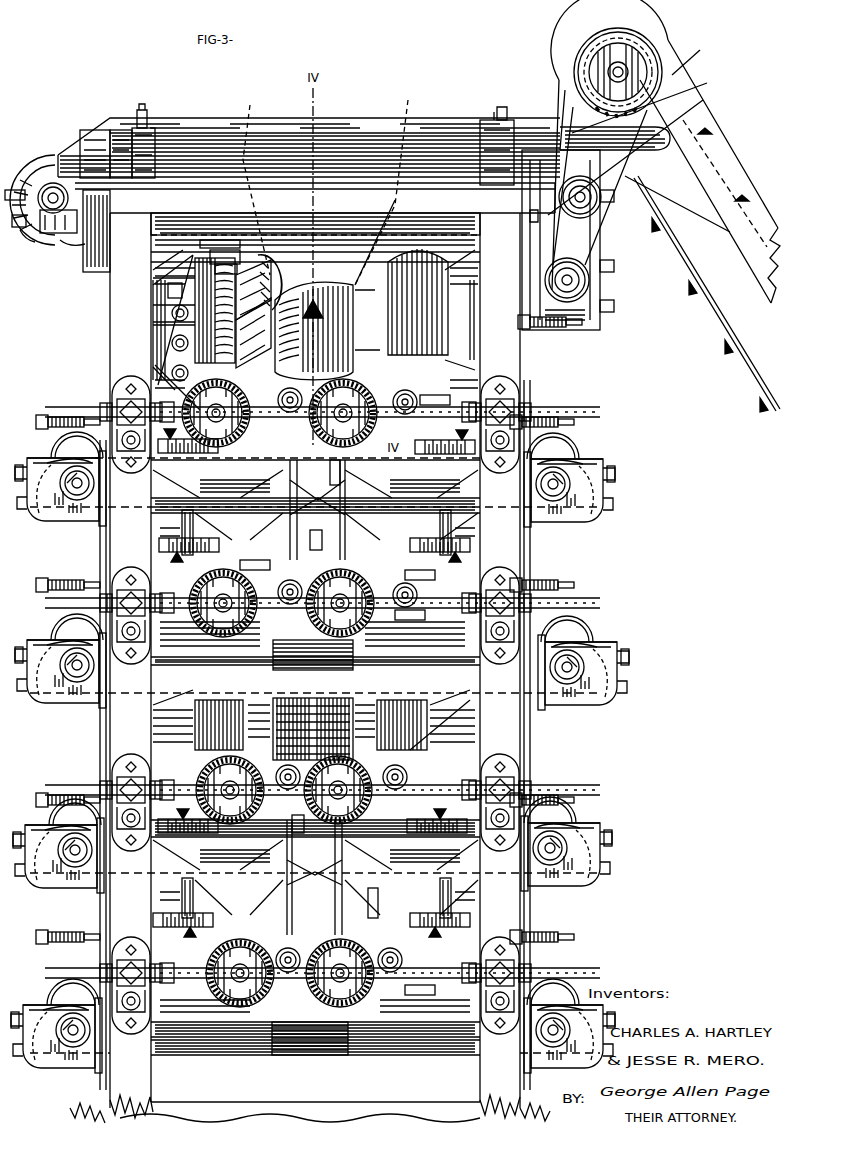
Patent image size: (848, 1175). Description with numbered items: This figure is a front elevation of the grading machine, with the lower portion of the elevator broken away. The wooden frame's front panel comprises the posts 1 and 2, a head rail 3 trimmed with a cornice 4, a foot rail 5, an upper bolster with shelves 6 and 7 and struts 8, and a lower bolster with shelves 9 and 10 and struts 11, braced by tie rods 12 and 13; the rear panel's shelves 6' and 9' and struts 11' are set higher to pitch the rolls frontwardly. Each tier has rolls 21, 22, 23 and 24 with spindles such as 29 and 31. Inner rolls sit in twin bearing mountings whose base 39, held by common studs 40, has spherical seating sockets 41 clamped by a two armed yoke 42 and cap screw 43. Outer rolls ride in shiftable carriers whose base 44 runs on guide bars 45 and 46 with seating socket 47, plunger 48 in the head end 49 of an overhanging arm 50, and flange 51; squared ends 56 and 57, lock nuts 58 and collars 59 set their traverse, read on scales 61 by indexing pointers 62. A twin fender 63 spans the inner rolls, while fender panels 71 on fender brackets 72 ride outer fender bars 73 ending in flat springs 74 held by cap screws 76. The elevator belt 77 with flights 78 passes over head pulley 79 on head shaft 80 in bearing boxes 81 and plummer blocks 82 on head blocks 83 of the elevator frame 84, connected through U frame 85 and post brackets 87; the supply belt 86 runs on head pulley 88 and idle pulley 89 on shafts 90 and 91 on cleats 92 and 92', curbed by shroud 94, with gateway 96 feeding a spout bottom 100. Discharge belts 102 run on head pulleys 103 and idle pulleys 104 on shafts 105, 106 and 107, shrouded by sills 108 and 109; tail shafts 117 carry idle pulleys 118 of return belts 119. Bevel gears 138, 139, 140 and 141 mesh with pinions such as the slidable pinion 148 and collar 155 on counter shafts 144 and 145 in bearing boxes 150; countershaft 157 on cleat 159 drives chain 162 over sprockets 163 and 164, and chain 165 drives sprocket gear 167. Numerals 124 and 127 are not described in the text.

The post 1 is at (520, 1105).
The post 2 is at (103, 1118).
The head rail 3 is at (190, 224).
The cornice 4 is at (170, 209).
The foot rail 5 is at (300, 1111).
The upper bolster shelf 6 is at (139, 330).
The upper bolster shelf of rear panel 6' is at (303, 468).
The upper bolster shelf 7 is at (385, 520).
The strut 8 is at (265, 545).
The lower bolster shelf 9 is at (316, 697).
The lower bolster shelf of rear panel 9' is at (451, 721).
The lower bolster shelf 10 is at (377, 895).
The strut 11 is at (257, 918).
The strut of rear panel 11' is at (465, 750).
The tie rod 12 is at (472, 491).
The tie rod 13 is at (472, 861).
The left hand outer roll 21 is at (258, 563).
The right hand inner roll 22 is at (259, 592).
The left hand inner roll 23 is at (336, 590).
The right hand outer roll 24 is at (362, 579).
The front end spindle 29 is at (289, 680).
The front end spindle 31 is at (397, 681).
The base of twin bearing mounting 39 is at (312, 732).
The common stud 40 is at (313, 696).
The spherical seating socket 41 is at (307, 925).
The two armed yoke 42 is at (289, 633).
The cap screw 43 is at (304, 645).
The base of shiftable bearing carrier 44 is at (329, 728).
The forward guide bar 45 is at (580, 395).
The hinder guide bar 46 is at (53, 679).
The spherical seating socket 47 is at (379, 925).
The plunger 48 is at (230, 268).
The head end of overhanging arm 49 is at (233, 249).
The overhanging arm 50 is at (302, 677).
The flange 51 is at (220, 242).
The squared end 56 is at (582, 324).
The squared end 57 is at (40, 419).
The lock nut 58 is at (324, 661).
The collar 59 is at (383, 686).
The scale 61 is at (220, 444).
The indexing pointer 62 is at (314, 739).
The twin fender 63 is at (321, 584).
The fender panel 71 is at (315, 576).
The fender bracket 72 is at (157, 302).
The outer fender bar 73 is at (465, 323).
The flat spring 74 is at (464, 582).
The cap screw 76 is at (310, 441).
The elevator belt 77 is at (713, 310).
The flight 78 is at (725, 360).
The head pulley 79 is at (697, 63).
The head shaft 80 is at (609, 145).
The bearing box 81 is at (40, 187).
The plummer block 82 is at (597, 294).
The head block 83 is at (713, 87).
The elevator frame 84 is at (730, 157).
The U frame 85 is at (478, 128).
The supply conveyor belt 86 is at (256, 182).
The post bracket 87 is at (148, 124).
The head pulley of supply conveyor 88 is at (595, 222).
The idle pulley 89 is at (45, 164).
The head shaft 90 is at (651, 262).
The tail shaft 91 is at (18, 238).
The cleat 92 is at (520, 215).
The cleat 92' is at (95, 238).
The shroud 94 is at (190, 118).
The gateway 96 is at (386, 185).
The spout bottom 100 is at (373, 225).
The discharge conveyor belt 102 is at (460, 1070).
The head pulley 103 is at (560, 470).
The idle pulley 104 is at (45, 464).
The head shaft 105 is at (595, 470).
The counter shaft 106 is at (597, 647).
The tail shaft 107 is at (28, 1007).
The sill 108 is at (190, 472).
The sill 109 is at (260, 635).
The tail shaft 117 is at (245, 1066).
The idle pulley 118 is at (270, 1044).
The return conveyor belt 119 is at (360, 1044).
The roller 124 is at (255, 680).
The roller 127 is at (365, 680).
The bevel gear 138 is at (228, 693).
The bevel gear 139 is at (340, 693).
The bevel gear 140 is at (270, 275).
The bevel gear 141 is at (440, 276).
The front counter shaft 144 is at (338, 674).
The rear counter shaft 145 is at (153, 278).
The slidable bevel pinion 148 is at (322, 680).
The bearing box 150 is at (114, 396).
The collar 155 is at (197, 997).
The supply drive countershaft 157 is at (567, 275).
The cleat 159 is at (540, 355).
The chain 162 is at (600, 258).
The sprocket 163 is at (593, 263).
The sprocket 164 is at (578, 212).
The chain 165 is at (565, 107).
The sprocket gear 167 is at (616, 104).